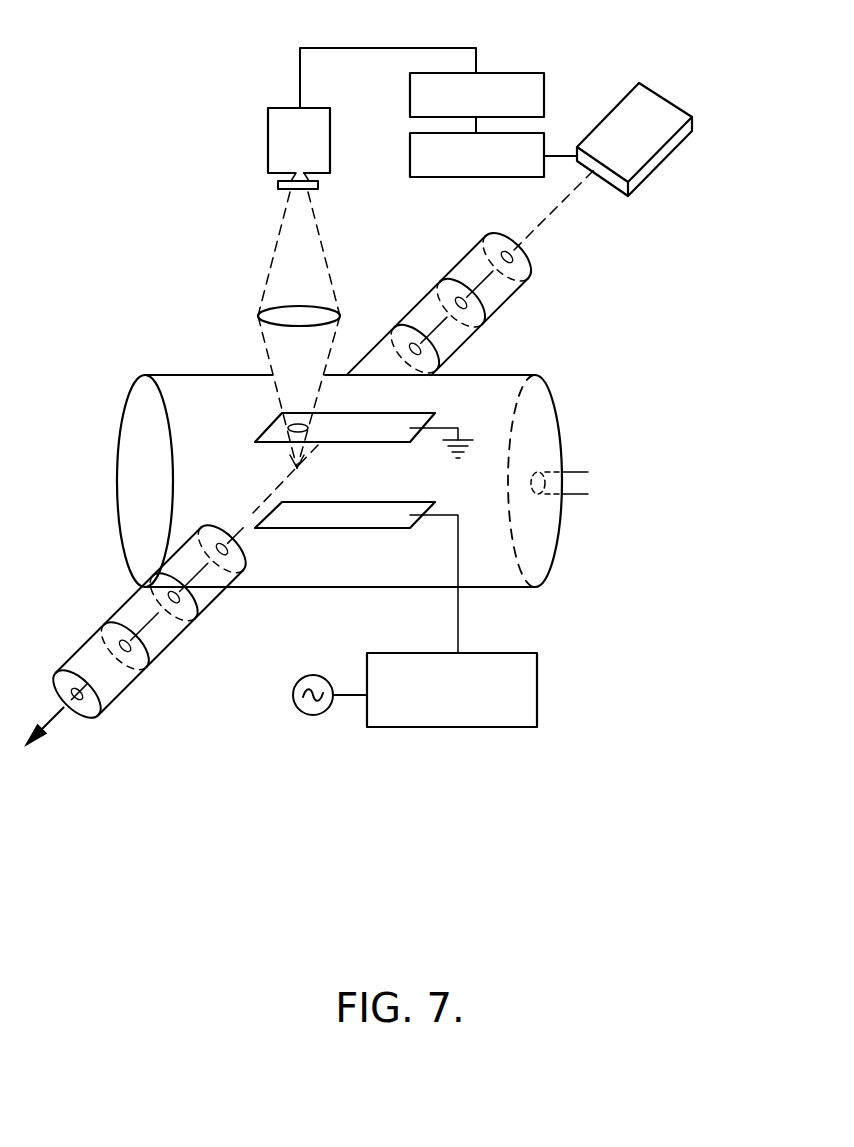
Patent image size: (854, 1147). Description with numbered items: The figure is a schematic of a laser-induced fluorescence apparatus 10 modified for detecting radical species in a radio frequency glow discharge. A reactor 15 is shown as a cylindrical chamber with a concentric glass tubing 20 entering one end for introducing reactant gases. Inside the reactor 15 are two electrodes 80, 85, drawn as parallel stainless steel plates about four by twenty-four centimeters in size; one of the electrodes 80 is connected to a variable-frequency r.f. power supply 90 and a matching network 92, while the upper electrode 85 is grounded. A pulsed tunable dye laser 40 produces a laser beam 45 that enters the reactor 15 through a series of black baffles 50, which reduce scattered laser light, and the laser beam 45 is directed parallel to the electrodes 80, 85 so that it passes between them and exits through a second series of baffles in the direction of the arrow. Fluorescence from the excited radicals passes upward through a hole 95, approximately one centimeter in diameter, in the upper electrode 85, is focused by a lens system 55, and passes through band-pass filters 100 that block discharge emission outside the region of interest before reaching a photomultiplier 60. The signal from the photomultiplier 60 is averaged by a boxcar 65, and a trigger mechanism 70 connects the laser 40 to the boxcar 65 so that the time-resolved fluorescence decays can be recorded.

The laser-induced fluorescence apparatus 10 is at (675, 398).
The reactor 15 is at (478, 388).
The concentric glass tubing 20 is at (588, 472).
The pulsed tunable dye laser 40 is at (652, 118).
The laser beam 45 is at (58, 718).
The black baffles 50 is at (130, 603).
The lens system 55 is at (250, 315).
The photomultiplier 60 is at (285, 128).
The boxcar 65 is at (527, 88).
The trigger mechanism 70 is at (437, 163).
The electrode 80 is at (340, 513).
The upper electrode 85 is at (258, 436).
The variable-frequency r.f. power supply 90 is at (330, 713).
The matching network 92 is at (525, 717).
The hole 95 is at (283, 418).
The band-pass filters 100 is at (271, 185).